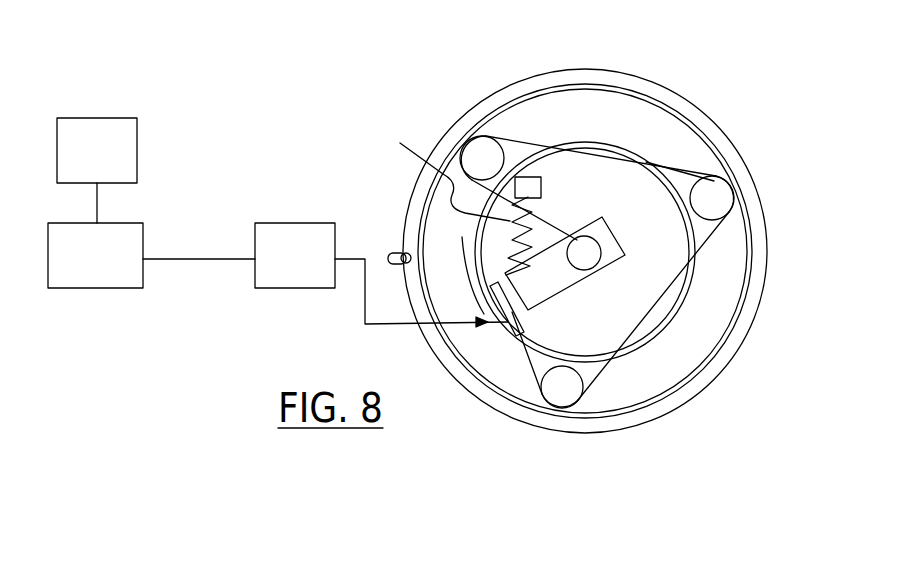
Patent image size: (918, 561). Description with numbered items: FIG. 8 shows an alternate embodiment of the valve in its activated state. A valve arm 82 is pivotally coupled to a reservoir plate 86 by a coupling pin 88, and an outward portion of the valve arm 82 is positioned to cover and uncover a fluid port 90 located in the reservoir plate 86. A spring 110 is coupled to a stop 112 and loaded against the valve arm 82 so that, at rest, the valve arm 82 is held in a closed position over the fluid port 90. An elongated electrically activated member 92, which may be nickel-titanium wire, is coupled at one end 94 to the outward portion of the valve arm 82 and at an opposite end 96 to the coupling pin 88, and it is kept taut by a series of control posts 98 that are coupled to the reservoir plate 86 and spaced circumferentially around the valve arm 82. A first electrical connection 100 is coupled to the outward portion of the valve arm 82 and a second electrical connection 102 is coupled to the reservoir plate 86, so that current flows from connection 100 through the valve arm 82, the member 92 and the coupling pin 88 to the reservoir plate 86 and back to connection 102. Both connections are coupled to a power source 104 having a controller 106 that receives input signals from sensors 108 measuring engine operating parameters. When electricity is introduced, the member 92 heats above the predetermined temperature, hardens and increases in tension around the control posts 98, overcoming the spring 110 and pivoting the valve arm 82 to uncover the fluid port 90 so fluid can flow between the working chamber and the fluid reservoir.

The valve arm 82 is at (547, 293).
The reservoir plate 86 is at (645, 84).
The coupling pin 88 is at (601, 254).
The fluid port 90 is at (550, 228).
The elongated electrically activated member 92 is at (670, 167).
The end of member 94 is at (512, 330).
The opposite end of member 96 is at (552, 224).
The control posts 98 is at (480, 155).
The first electrical connection 100 is at (429, 311).
The second electrical connection 102 is at (390, 250).
The power source 104 is at (295, 222).
The controller 106 is at (135, 236).
The sensors 108 is at (128, 135).
The spring 110 is at (437, 180).
The stop 112 is at (535, 177).